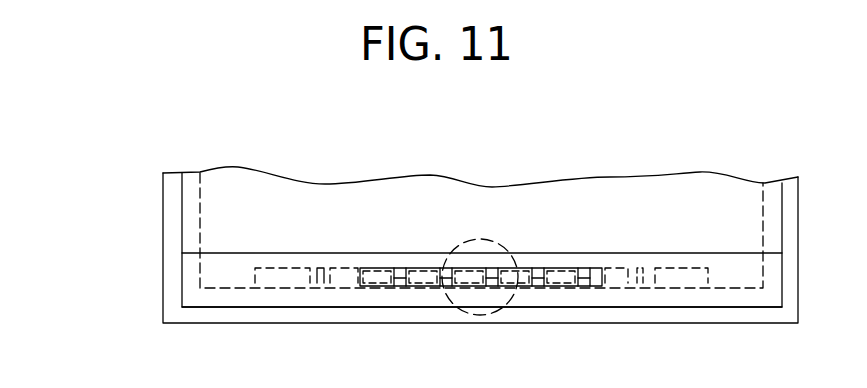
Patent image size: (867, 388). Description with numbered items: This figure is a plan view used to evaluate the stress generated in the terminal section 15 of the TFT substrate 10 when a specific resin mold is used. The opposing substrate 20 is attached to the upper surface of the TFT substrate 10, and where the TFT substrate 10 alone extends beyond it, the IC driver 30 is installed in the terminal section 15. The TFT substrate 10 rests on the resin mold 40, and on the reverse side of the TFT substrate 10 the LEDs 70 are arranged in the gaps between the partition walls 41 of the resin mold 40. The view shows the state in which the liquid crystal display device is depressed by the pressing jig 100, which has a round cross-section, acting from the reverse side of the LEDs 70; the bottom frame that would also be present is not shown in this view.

The TFT substrate 10 is at (190, 268).
The terminal section 15 is at (190, 268).
The opposing substrate 20 is at (192, 205).
The IC driver 30 is at (399, 288).
The resin mold 40 is at (172, 303).
The partition walls 41 is at (321, 283).
The LEDs 70 is at (274, 281).
The pressing jig 100 is at (497, 240).